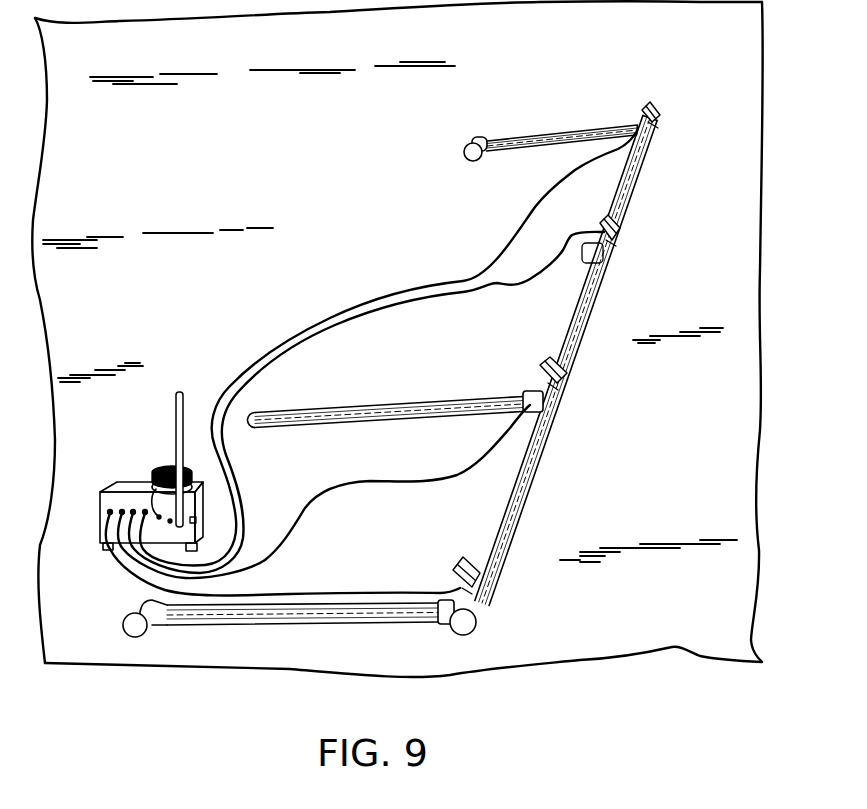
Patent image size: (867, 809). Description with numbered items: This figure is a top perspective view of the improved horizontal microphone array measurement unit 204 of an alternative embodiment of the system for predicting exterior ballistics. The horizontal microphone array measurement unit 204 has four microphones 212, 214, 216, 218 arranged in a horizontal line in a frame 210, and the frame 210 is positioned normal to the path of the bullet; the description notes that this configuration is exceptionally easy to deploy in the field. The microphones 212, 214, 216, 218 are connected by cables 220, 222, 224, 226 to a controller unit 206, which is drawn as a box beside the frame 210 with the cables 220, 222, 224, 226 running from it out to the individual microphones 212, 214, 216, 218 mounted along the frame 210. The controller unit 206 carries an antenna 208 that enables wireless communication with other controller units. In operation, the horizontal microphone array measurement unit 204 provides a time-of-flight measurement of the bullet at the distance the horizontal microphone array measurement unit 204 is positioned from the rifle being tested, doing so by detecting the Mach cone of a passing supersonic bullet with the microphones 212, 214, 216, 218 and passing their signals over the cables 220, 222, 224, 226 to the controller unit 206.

The horizontal microphone array measurement unit 204 is at (625, 60).
The controller unit 206 is at (125, 487).
The antenna 208 is at (183, 403).
The frame 210 is at (523, 472).
The microphone 212 is at (467, 571).
The microphone 214 is at (567, 366).
The microphone 216 is at (622, 226).
The microphone 218 is at (660, 110).
The cable 220 is at (362, 590).
The cable 222 is at (408, 484).
The cable 224 is at (437, 303).
The cable 226 is at (437, 292).